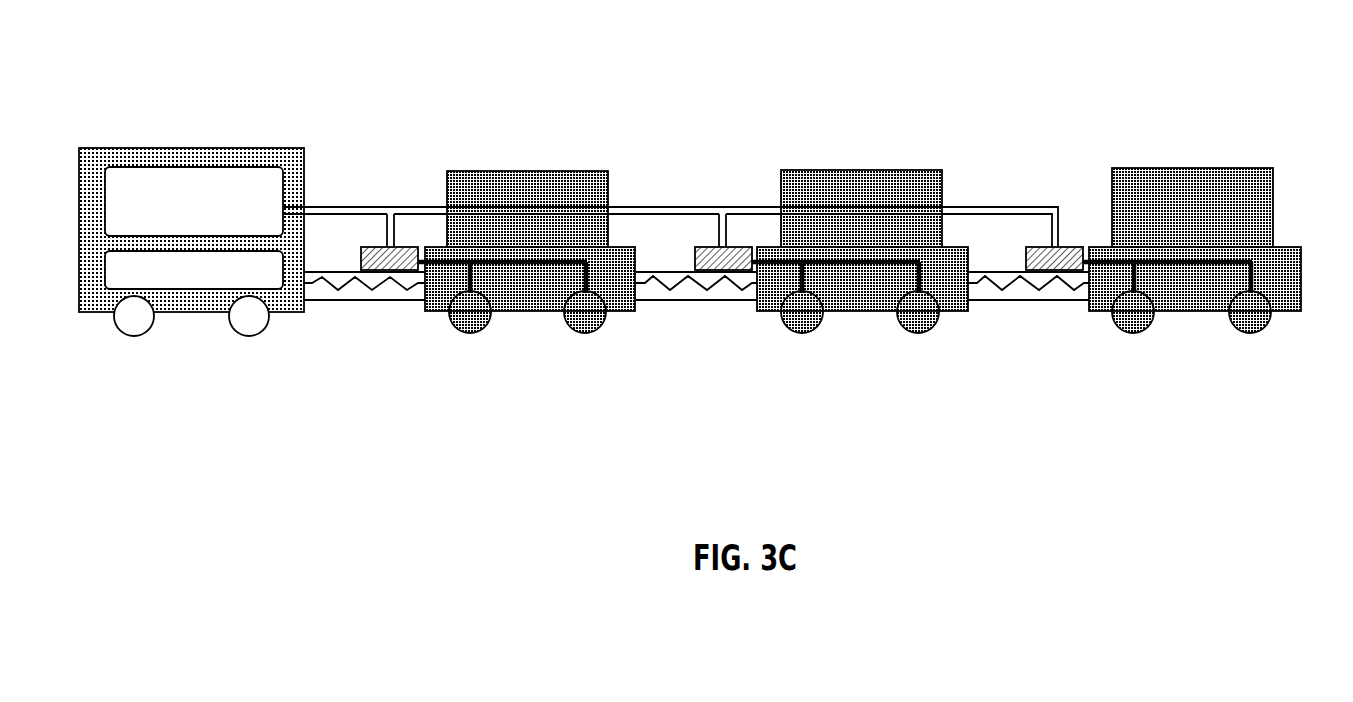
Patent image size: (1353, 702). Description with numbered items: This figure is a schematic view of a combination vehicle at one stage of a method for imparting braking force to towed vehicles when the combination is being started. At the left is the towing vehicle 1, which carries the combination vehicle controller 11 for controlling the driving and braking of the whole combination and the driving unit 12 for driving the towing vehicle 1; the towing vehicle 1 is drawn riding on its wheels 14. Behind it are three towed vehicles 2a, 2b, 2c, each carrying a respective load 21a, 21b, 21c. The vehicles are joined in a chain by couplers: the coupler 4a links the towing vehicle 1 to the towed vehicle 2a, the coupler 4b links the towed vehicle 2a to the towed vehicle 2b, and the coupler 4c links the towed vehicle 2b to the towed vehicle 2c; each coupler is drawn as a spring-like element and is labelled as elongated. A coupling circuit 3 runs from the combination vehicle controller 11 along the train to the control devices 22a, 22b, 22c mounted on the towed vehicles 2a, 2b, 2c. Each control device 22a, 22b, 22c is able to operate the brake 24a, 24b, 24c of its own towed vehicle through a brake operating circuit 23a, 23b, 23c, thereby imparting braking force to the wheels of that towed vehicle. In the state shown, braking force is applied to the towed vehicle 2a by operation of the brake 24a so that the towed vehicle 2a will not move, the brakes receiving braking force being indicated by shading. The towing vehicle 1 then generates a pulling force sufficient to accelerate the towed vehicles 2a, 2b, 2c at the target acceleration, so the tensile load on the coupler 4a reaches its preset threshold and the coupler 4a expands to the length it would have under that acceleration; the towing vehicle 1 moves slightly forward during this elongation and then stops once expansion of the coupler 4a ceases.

The towing vehicle 1 is at (207, 148).
The combination vehicle controller 11 is at (133, 167).
The driving unit 12 is at (194, 270).
The wheels of leading vehicle 14 is at (134, 317).
The coupling circuit 3 is at (329, 212).
The towed vehicle 2a is at (623, 245).
The towed vehicle 2b is at (952, 245).
The towed vehicle 2c is at (1283, 245).
The coupler 4a is at (358, 297).
The coupler 4b is at (702, 297).
The coupler 4c is at (1032, 297).
The load 21a is at (530, 182).
The load 21b is at (865, 180).
The load 21c is at (1197, 178).
The control device 22a is at (405, 245).
The control device 22b is at (737, 245).
The control device 22c is at (1067, 245).
The brake operating circuit 23a is at (510, 313).
The brake operating circuit 23b is at (843, 313).
The brake operating circuit 23c is at (1173, 313).
The brake 24a is at (477, 337).
The brake 24b is at (808, 337).
The brake 24c is at (1140, 337).